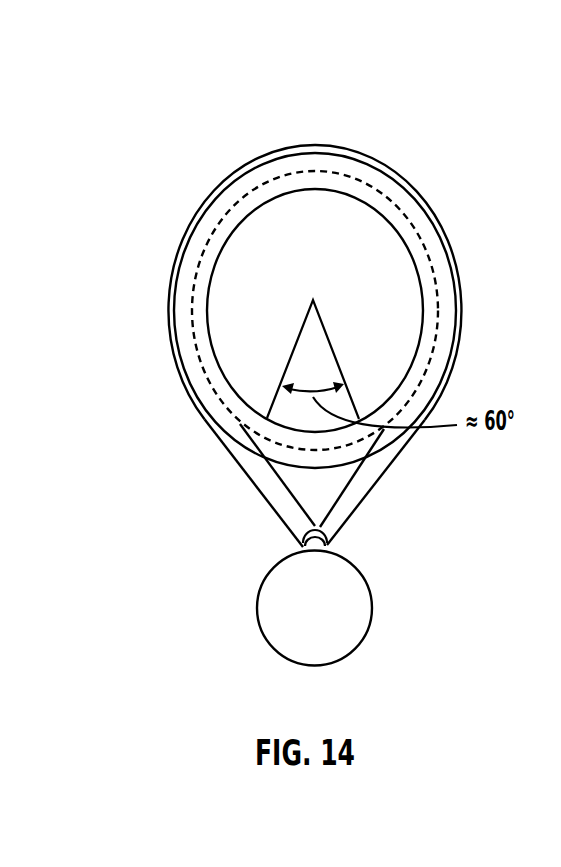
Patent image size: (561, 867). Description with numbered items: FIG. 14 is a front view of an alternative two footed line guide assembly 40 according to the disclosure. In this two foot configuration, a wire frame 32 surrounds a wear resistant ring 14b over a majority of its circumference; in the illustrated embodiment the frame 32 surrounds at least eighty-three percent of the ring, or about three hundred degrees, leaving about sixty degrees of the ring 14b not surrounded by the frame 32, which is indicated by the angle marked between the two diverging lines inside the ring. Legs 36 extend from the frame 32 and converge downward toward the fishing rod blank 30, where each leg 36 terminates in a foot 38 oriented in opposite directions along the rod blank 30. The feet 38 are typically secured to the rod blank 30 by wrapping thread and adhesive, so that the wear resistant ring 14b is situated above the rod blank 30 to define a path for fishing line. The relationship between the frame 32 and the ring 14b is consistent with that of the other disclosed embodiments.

The two footed line guide assembly 40 is at (208, 74).
The frame 32 is at (397, 173).
The wear resistant ring 14b is at (190, 247).
The legs 36 is at (233, 463).
The foot 38 is at (320, 541).
The rod blank 30 is at (257, 615).